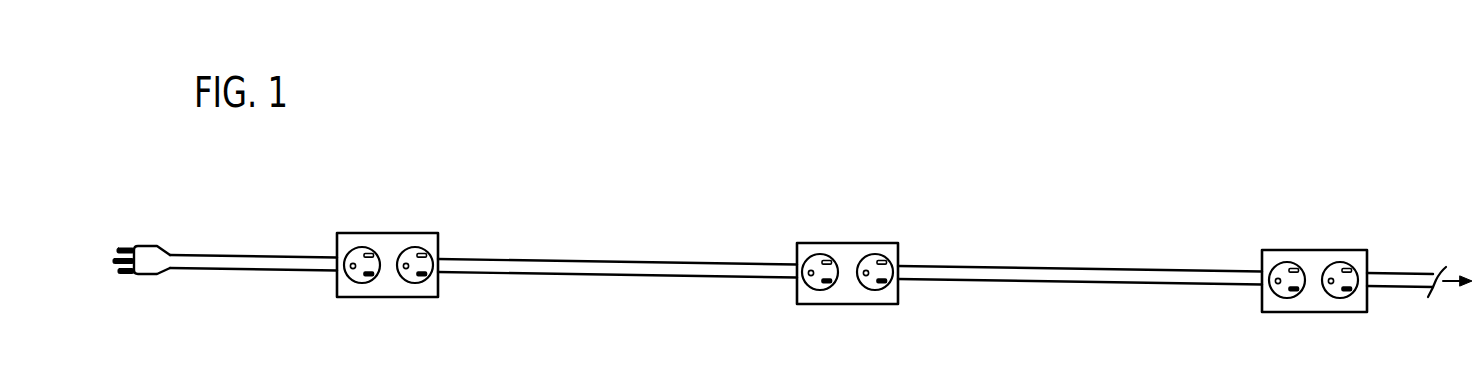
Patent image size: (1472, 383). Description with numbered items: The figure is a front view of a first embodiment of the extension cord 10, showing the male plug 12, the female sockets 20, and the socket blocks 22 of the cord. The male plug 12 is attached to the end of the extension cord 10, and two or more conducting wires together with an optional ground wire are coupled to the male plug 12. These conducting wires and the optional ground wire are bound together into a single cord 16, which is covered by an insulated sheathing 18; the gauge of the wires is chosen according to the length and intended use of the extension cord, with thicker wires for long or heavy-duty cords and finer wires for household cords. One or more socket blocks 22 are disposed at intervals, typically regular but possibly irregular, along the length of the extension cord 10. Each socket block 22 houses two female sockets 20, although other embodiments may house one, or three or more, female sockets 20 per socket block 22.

The extension cord 10 is at (254, 237).
The male plug 12 is at (151, 245).
The cord 16 is at (647, 263).
The insulated sheathing 18 is at (1085, 268).
The female socket 20 is at (835, 258).
The socket block 22 is at (850, 305).